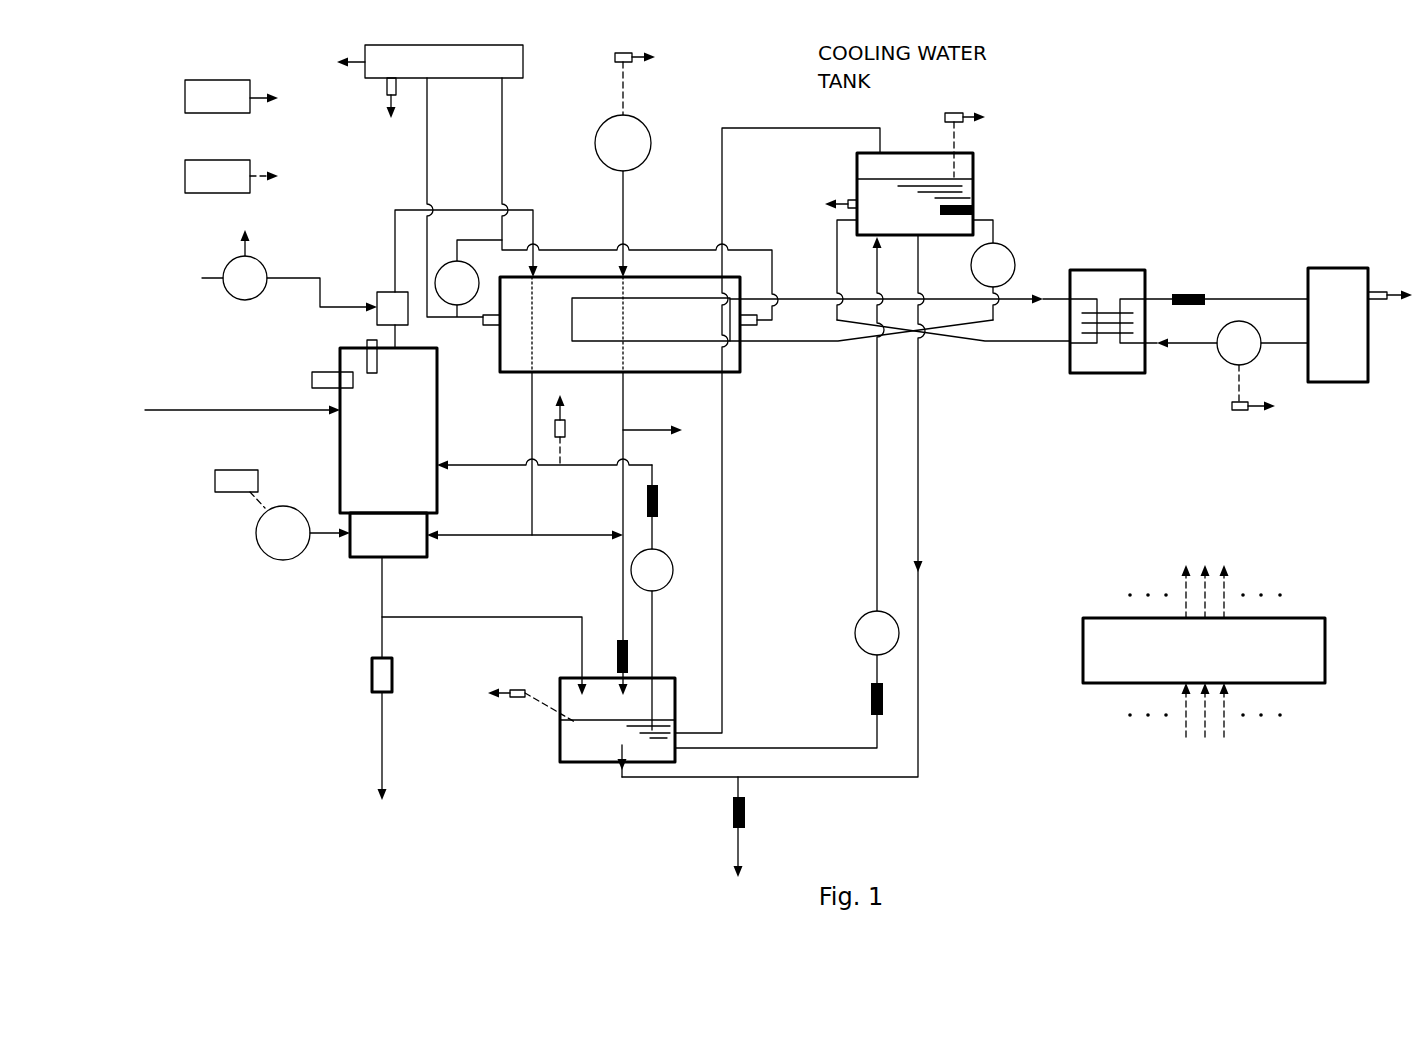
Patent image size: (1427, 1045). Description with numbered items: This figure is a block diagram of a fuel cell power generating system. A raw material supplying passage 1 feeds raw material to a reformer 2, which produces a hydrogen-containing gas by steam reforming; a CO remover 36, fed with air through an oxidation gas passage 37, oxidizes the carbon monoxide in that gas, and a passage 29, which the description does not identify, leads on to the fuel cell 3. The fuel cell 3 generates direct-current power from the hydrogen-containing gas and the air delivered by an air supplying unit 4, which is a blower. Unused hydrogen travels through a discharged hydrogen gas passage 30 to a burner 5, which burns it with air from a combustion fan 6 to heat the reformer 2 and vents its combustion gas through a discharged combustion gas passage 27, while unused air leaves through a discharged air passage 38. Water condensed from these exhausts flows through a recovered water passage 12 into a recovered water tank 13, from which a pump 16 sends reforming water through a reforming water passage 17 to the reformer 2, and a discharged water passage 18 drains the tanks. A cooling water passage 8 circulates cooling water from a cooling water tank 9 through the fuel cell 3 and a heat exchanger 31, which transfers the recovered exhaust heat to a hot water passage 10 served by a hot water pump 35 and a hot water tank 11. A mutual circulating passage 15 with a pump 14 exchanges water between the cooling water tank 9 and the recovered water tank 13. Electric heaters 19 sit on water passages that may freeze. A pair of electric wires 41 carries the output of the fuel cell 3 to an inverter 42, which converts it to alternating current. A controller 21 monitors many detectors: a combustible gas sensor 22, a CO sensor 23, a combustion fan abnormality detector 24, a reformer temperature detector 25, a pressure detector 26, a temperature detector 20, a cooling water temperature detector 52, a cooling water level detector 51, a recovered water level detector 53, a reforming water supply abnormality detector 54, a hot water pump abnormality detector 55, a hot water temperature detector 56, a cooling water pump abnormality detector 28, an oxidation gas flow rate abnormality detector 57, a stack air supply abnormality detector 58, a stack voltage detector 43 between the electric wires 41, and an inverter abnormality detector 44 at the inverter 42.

The raw material supplying passage 1 is at (207, 410).
The reformer 2 is at (338, 450).
The fuel cell 3 is at (587, 276).
The air supplying unit 4 is at (652, 135).
The burner 5 is at (363, 538).
The combustion fan 6 is at (262, 540).
The cooling water passage 8 is at (818, 292).
The cooling water tank 9 is at (910, 152).
The hot water passage 10 is at (1228, 299).
The hot water tank 11 is at (1340, 268).
The recovered water passage 12 is at (560, 572).
The recovered water tank 13 is at (585, 767).
The pump 14 is at (860, 614).
The mutual circulating passage 15 is at (875, 497).
The reforming water pump 16 is at (663, 562).
The reforming water passage 17 is at (490, 465).
The discharged water passage 18 is at (735, 852).
The electric heater 19 is at (970, 202).
The temperature detector 20 is at (185, 172).
The controller 21 is at (1300, 616).
The combustible gas sensor 22 is at (185, 90).
The CO sensor 23 is at (371, 678).
The combustion fan abnormality detector 24 is at (215, 481).
The reformer temperature detector 25 is at (366, 345).
The pressure detector 26 is at (312, 375).
The discharged combustion gas passage 27 is at (380, 735).
The cooling water pump abnormality detector 28 is at (1052, 212).
The reformed gas line 29 is at (405, 207).
The discharged hydrogen gas passage 30 is at (497, 540).
The heat exchanger 31 is at (1107, 378).
The hot water pump 35 is at (1226, 362).
The CO remover 36 is at (383, 292).
The oxidation gas passage 37 is at (300, 276).
The discharged air passage 38 is at (625, 388).
The electric wires 41 is at (501, 130).
The inverter 42 is at (523, 60).
The stack voltage detector 43 is at (452, 262).
The inverter abnormality detector 44 is at (386, 88).
The cooling water level detector 51 is at (965, 112).
The cooling water temperature detector 52 is at (848, 202).
The recovered water level detector 53 is at (512, 700).
The reforming water supply abnormality detector 54 is at (566, 428).
The hot water pump abnormality detector 55 is at (1245, 412).
The hot water temperature detector 56 is at (1388, 290).
The oxidation gas flow rate abnormality detector 57 is at (258, 262).
The stack air supply abnormality detector 58 is at (616, 55).